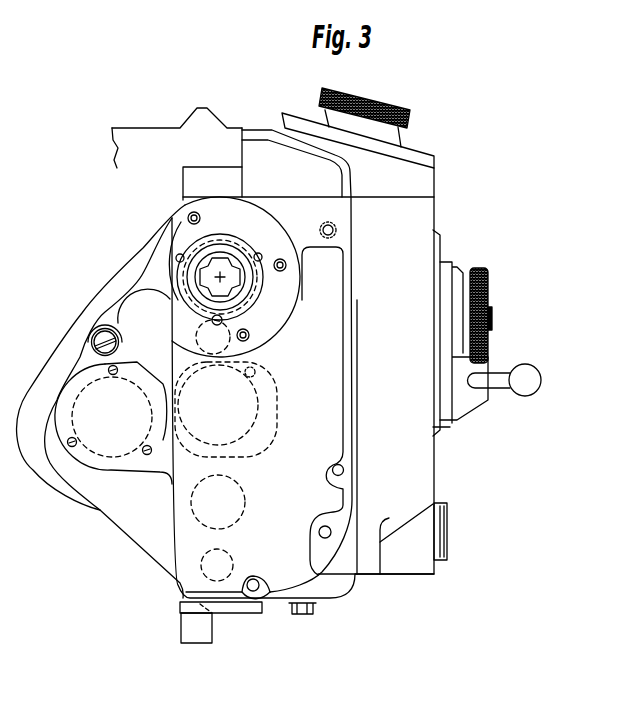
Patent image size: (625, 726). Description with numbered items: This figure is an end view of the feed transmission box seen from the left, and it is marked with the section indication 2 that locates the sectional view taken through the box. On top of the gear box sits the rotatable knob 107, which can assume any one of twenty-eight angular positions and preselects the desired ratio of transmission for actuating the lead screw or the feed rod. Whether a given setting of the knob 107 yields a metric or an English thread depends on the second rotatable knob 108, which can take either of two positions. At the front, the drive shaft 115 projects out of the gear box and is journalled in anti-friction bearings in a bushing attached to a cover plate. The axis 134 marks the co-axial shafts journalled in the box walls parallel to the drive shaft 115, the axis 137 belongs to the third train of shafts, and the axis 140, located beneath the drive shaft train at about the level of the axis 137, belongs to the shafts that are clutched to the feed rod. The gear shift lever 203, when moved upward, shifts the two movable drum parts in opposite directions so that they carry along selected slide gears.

The section line 2- 2 is at (220, 173).
The rotatable knob 107 is at (408, 113).
The rotatable knob 108 is at (488, 295).
The drive shaft 115 is at (226, 281).
The axis of shafts 131, 132 and 133 134 is at (160, 347).
The axis of shafts 135 and 136 137 is at (115, 422).
The axis of shafts 138 and 139 140 is at (218, 410).
The gear shift lever 203 is at (503, 384).